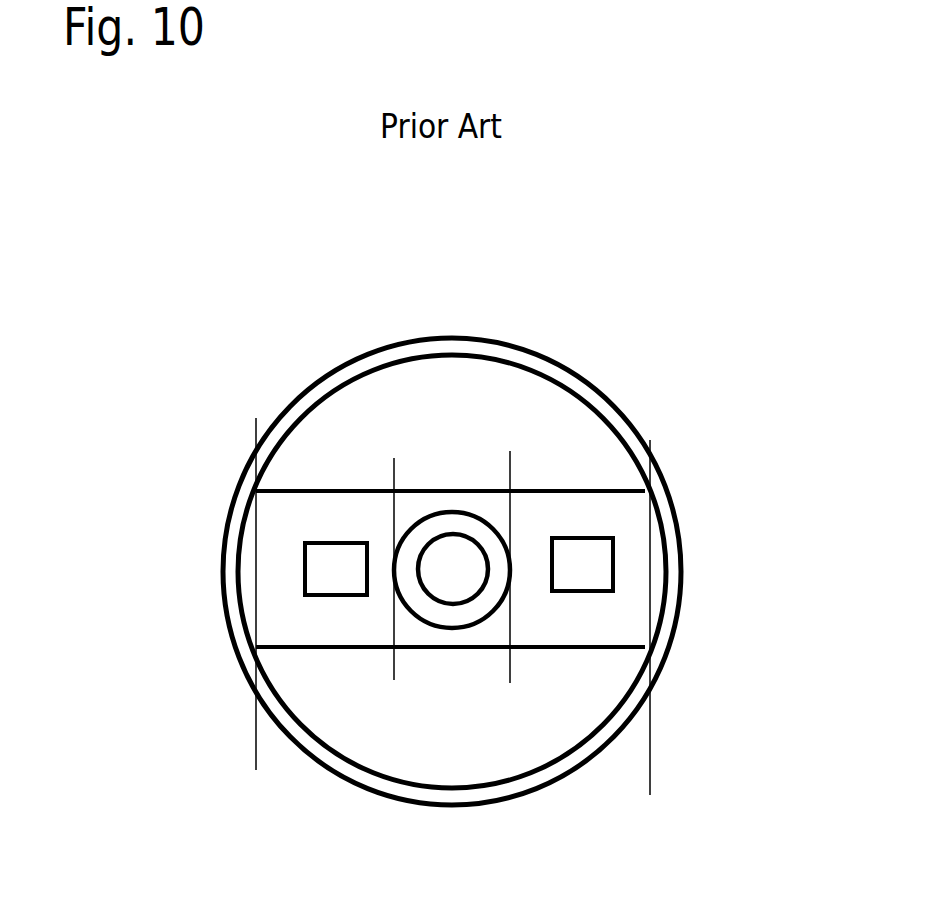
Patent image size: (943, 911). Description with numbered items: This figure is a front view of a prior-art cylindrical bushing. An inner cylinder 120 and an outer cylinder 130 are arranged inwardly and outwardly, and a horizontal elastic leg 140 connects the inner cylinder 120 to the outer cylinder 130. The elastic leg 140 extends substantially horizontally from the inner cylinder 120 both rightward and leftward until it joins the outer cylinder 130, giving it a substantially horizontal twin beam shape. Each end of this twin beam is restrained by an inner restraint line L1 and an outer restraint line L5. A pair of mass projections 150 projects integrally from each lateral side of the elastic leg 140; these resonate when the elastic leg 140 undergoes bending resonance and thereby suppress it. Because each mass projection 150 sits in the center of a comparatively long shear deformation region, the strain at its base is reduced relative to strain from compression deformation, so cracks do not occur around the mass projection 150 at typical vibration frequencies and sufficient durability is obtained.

The inner cylinder 120 is at (457, 523).
The outer cylinder 130 is at (305, 385).
The elastic leg 140 is at (560, 490).
The mass projections 150 is at (318, 572).
The inner restraint line L1 is at (441, 600).
The outer restraint line L5 is at (431, 638).